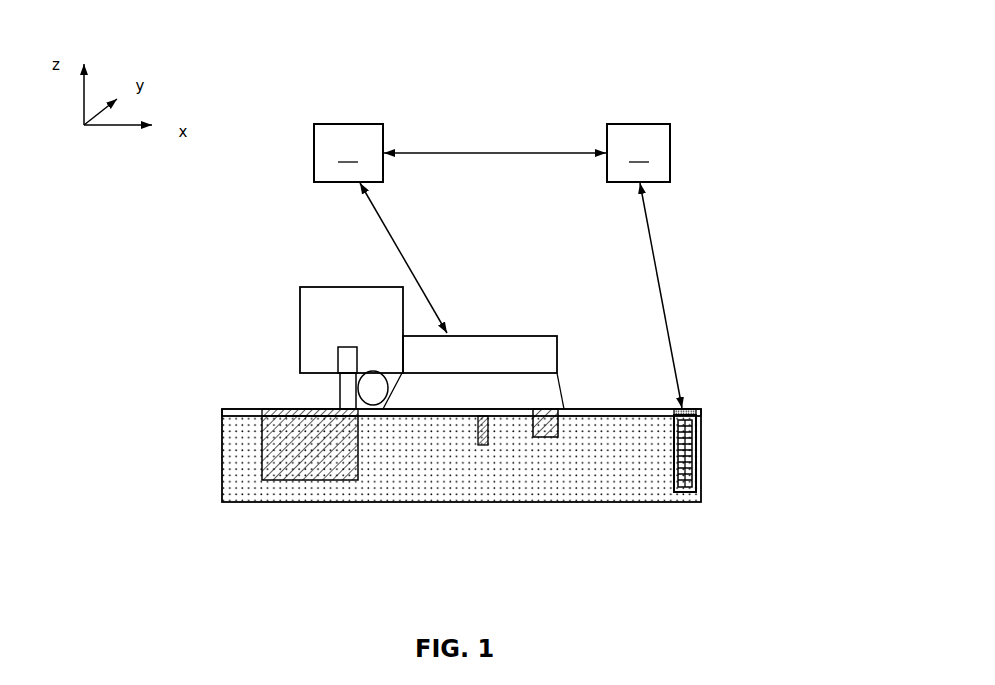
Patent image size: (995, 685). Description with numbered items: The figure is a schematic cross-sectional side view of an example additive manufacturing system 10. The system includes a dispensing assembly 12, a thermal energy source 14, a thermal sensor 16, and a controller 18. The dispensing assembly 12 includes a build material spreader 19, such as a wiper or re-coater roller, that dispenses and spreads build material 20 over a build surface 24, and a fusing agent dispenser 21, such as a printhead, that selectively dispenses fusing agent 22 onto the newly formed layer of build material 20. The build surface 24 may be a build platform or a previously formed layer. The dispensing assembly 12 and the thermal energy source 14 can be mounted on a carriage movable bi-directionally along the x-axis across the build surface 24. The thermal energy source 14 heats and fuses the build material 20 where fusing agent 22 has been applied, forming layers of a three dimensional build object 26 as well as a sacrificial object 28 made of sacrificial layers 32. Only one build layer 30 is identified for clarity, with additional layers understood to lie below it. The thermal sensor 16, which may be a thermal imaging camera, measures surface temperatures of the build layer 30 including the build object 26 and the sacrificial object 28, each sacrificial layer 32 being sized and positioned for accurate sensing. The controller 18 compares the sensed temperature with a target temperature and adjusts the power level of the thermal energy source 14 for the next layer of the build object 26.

The additive manufacturing system 10 is at (655, 61).
The dispensing assembly 12 is at (316, 287).
The thermal energy source 14 is at (517, 336).
The thermal sensor 16 is at (638, 153).
The controller 18 is at (348, 153).
The build material spreader 19 is at (358, 388).
The build material 20 is at (240, 409).
The fusing agent dispenser 21 is at (338, 348).
The fusing agent 22 is at (292, 409).
The build surface 24 is at (225, 416).
The three dimensional build object 26 is at (262, 454).
The sacrificial object 28 is at (697, 450).
The build layer 30 is at (609, 409).
The sacrificial layer 32 is at (698, 410).